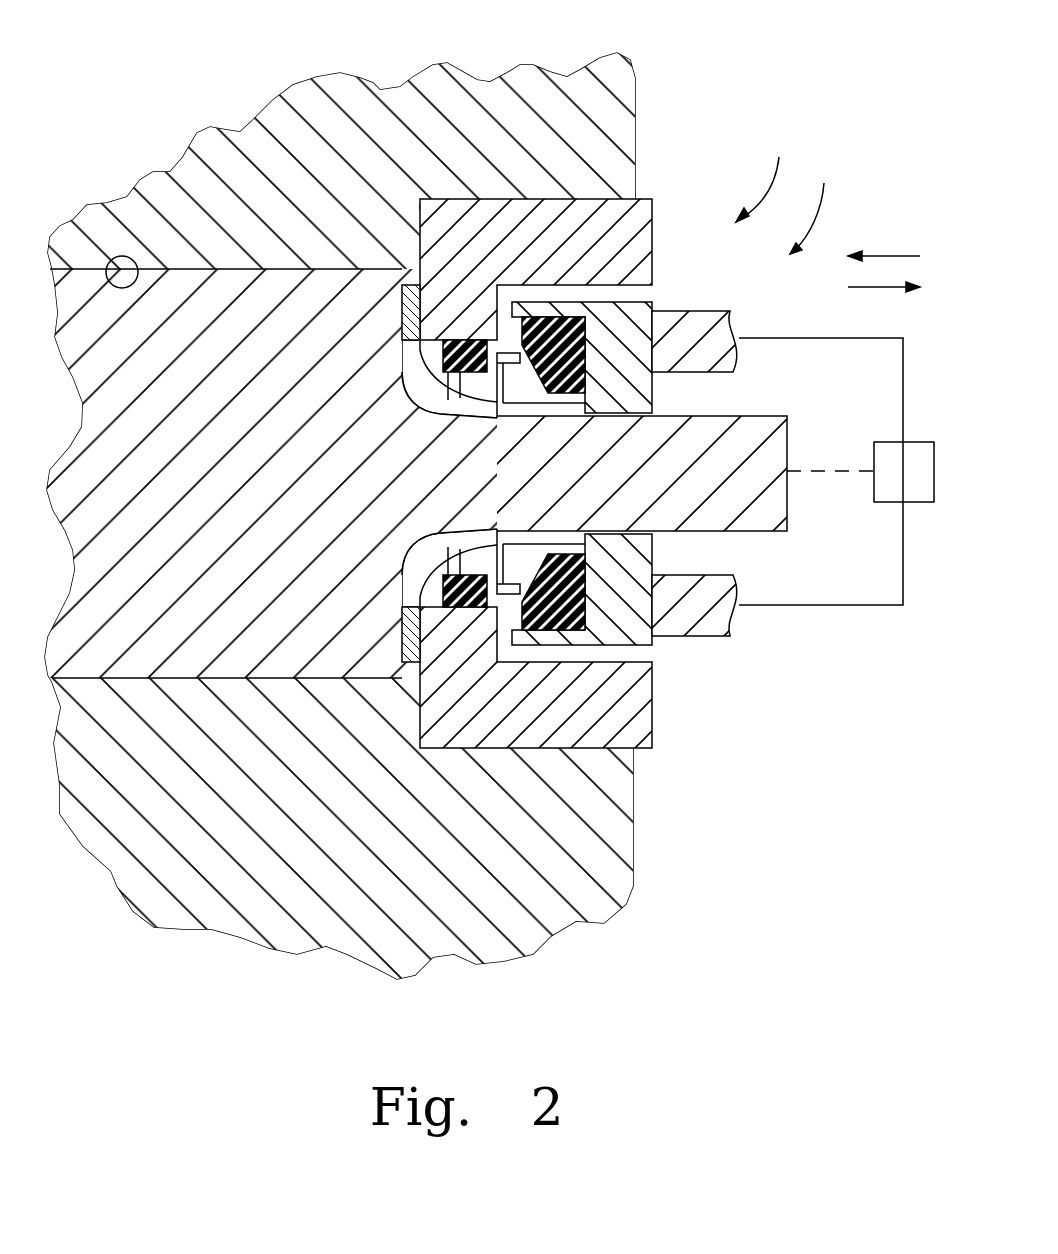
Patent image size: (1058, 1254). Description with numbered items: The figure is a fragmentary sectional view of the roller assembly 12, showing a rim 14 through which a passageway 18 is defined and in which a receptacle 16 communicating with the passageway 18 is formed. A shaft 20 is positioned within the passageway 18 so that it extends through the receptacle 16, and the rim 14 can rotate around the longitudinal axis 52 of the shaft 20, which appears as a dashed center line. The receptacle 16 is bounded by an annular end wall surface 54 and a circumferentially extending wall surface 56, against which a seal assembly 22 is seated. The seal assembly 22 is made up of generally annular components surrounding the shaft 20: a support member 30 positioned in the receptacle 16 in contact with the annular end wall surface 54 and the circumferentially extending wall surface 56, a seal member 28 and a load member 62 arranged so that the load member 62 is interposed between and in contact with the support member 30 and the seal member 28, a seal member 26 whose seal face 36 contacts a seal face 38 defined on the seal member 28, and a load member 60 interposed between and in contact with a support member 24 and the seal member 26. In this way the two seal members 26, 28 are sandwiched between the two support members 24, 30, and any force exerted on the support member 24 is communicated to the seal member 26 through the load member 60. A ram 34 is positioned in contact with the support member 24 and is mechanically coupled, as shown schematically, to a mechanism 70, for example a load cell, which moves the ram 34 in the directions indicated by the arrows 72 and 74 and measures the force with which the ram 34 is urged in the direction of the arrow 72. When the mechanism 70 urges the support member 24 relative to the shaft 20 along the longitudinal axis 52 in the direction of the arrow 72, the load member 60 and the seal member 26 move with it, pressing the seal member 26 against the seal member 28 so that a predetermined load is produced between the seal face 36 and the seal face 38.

The roller assembly 12 is at (763, 174).
The rim 14 is at (632, 82).
The receptacle 16 is at (472, 197).
The passageway 18 is at (133, 261).
The shaft 20 is at (775, 417).
The seal assembly 22 is at (815, 202).
The support member 24 is at (648, 392).
The seal member 26 is at (572, 418).
The seal member 28 is at (460, 401).
The support member 30 is at (653, 204).
The ram 34 is at (703, 312).
The seal face 36 is at (497, 354).
The seal face 38 is at (478, 414).
The longitudinal axis 52 is at (826, 471).
The annular end wall surface 54 is at (412, 192).
The circumferentially extending wall surface 56 is at (577, 197).
The load member 60 is at (565, 403).
The load member 62 is at (462, 340).
The mechanism 70 is at (892, 490).
The arrow 72 is at (897, 256).
The arrow 74 is at (866, 288).